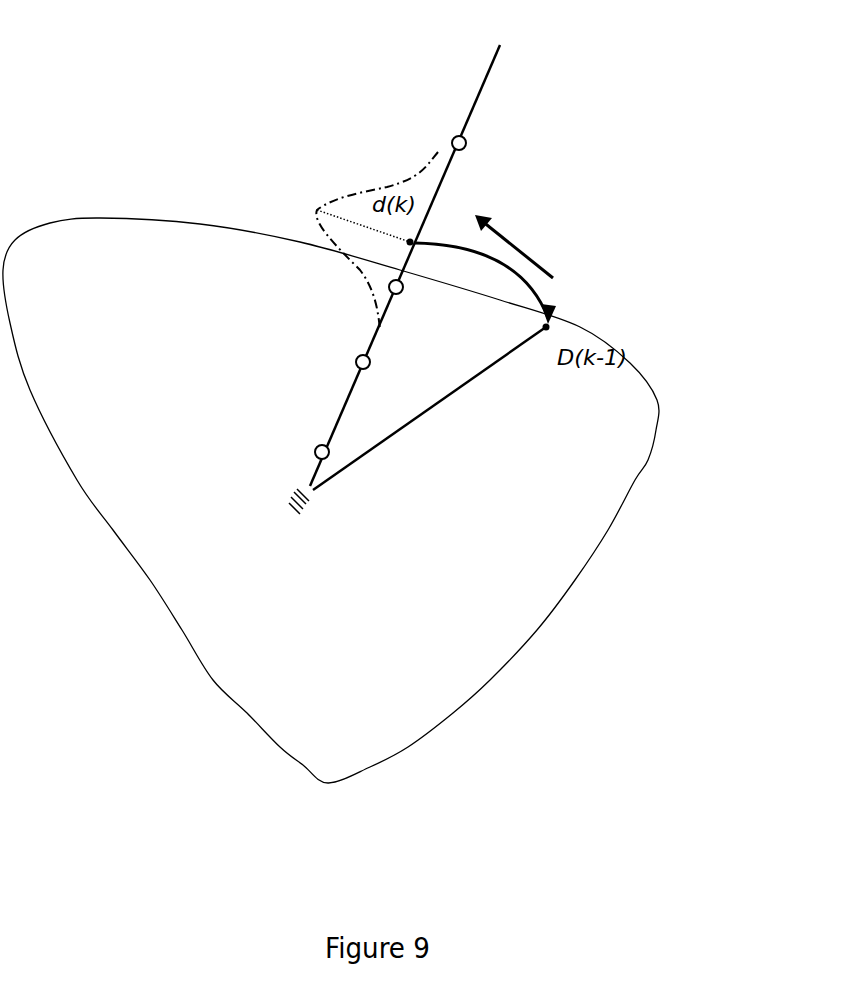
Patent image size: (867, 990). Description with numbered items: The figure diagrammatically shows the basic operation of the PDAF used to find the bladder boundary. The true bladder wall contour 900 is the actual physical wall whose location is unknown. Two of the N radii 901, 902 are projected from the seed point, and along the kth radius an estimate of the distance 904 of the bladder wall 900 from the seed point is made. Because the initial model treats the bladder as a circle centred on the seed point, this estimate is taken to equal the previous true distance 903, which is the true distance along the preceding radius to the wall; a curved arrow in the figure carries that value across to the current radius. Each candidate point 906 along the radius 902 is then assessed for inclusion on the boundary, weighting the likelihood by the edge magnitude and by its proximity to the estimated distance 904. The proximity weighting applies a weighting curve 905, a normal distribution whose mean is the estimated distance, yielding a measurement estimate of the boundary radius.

The true bladder wall contour 900 is at (650, 443).
The radius 901 is at (433, 407).
The radius 902 is at (345, 412).
The D(k-1) 903 is at (555, 320).
The distance estimate d(k) 904 is at (418, 233).
The weighting curve 905 is at (388, 183).
The point r_i 906 is at (464, 148).